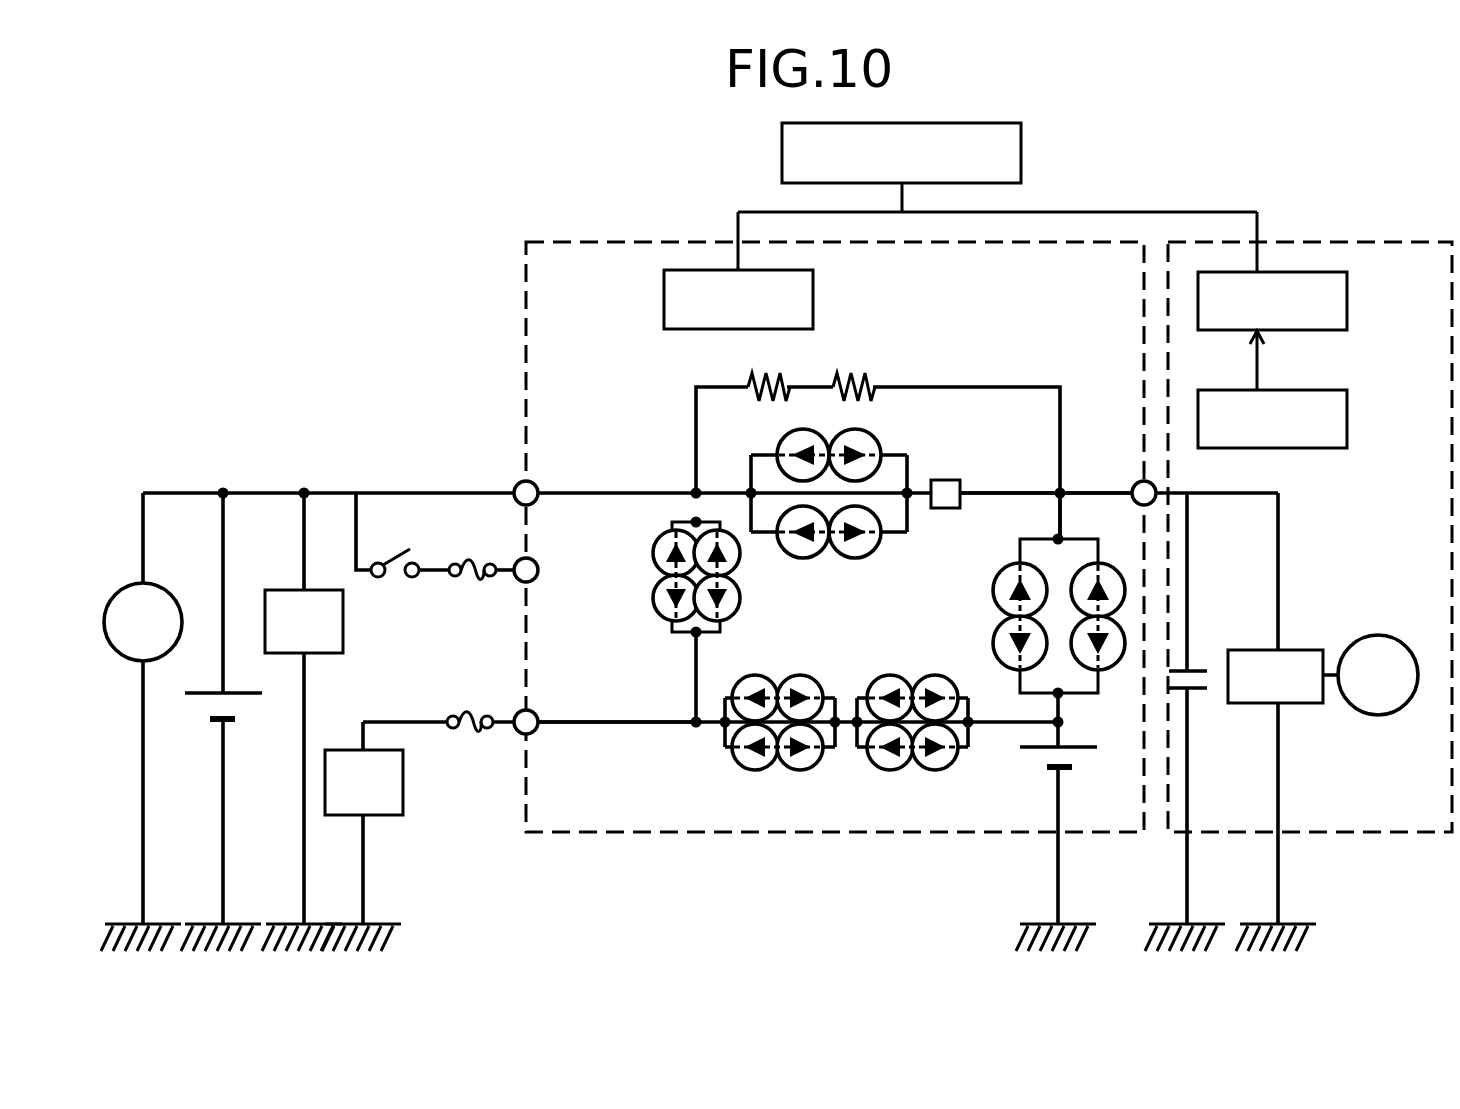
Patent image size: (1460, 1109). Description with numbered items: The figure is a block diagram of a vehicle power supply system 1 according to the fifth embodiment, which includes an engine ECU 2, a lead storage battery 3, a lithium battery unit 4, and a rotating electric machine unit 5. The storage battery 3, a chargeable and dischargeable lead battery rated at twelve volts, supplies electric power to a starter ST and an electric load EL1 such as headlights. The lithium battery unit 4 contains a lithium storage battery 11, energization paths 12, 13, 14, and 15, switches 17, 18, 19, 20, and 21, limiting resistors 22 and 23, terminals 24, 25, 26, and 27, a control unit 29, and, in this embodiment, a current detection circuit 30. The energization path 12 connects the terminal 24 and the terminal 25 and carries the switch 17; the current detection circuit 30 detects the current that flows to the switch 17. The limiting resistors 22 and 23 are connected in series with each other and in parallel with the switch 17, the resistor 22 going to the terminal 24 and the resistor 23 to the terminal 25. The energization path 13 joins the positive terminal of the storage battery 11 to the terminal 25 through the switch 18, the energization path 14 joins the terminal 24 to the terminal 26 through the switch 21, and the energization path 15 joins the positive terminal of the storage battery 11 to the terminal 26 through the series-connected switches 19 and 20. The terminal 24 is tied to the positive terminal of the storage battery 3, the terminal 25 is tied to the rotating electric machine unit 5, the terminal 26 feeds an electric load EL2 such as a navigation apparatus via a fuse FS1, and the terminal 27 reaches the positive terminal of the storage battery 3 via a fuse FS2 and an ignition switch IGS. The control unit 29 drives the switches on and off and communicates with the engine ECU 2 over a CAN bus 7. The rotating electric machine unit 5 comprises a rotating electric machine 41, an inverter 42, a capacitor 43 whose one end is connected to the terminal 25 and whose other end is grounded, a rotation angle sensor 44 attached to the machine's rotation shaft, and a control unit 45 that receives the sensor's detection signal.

The power supply system 1 is at (200, 196).
The engine electronic control unit (ECU) 2 is at (1021, 150).
The storage battery 3 is at (233, 693).
The lithium battery unit 4 is at (607, 240).
The rotating electric machine unit 5 is at (1378, 242).
The CAN bus 7 is at (1087, 212).
The storage battery 11 is at (1037, 747).
The energization path 12 is at (990, 493).
The energization path 13 is at (1058, 515).
The energization path 14 is at (700, 657).
The energization path 15 is at (657, 718).
The switch 17 is at (878, 488).
The switch 18 is at (1050, 608).
The switch 19 is at (780, 713).
The switch 20 is at (915, 720).
The switch 21 is at (717, 578).
The limiting resistor 22 is at (778, 385).
The limiting resistor 23 is at (865, 377).
The terminal 24 is at (537, 482).
The terminal 25 is at (1133, 483).
The terminal 26 is at (535, 735).
The terminal 27 is at (537, 562).
The control unit 29 is at (813, 297).
The current detection circuit 30 is at (947, 508).
The rotating electric machine 41 is at (1388, 636).
The inverter 42 is at (1302, 650).
The capacitor 43 is at (1197, 667).
The rotation angle sensor 44 is at (1347, 417).
The control unit 45 is at (1347, 307).
The starter ST is at (112, 597).
The ignition switch IGS is at (410, 549).
The fuse FS1 is at (487, 728).
The fuse FS2 is at (488, 576).
The electric load EL1 is at (280, 653).
The electric load EL2 is at (400, 815).